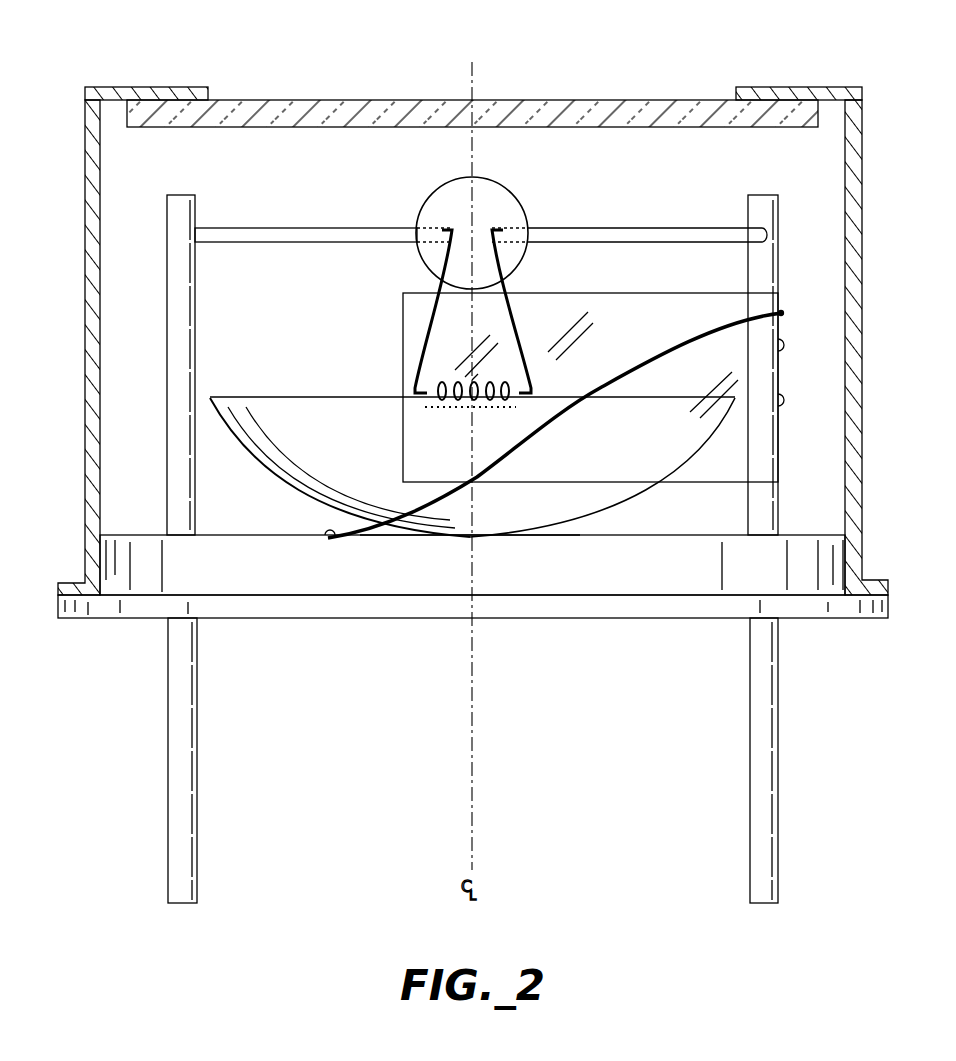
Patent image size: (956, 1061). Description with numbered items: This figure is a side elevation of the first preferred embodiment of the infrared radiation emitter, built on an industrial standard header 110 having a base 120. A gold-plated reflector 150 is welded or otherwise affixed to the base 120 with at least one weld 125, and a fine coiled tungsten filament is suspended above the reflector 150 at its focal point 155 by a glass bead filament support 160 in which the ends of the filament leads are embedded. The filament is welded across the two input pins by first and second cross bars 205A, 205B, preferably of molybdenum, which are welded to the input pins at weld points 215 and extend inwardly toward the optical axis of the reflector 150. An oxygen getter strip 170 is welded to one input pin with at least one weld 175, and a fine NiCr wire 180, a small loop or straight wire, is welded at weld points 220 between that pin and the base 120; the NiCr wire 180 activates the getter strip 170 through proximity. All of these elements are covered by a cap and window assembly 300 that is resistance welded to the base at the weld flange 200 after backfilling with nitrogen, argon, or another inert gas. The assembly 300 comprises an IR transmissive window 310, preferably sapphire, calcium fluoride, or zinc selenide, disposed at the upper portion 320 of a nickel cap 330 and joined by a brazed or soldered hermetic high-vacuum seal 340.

The cap and window assembly 300 is at (454, 304).
The IR transmissive window 310 is at (592, 100).
The upper portion 320 is at (877, 123).
The cap 330 is at (86, 320).
The hermetic/high vacuum seal 340 is at (212, 97).
The weld flange 200 is at (476, 615).
The header 110 is at (337, 628).
The base 120 is at (145, 587).
The weld 125 is at (484, 546).
The reflector 150 is at (215, 445).
The focal point 155 is at (405, 374).
The glass bead filament support 160 is at (495, 212).
The oxygen getter strip 170 is at (588, 291).
The weld 175 is at (795, 398).
The NiCr wire 180 is at (562, 432).
The first cross bar 205A is at (316, 228).
The second cross bar 205B is at (620, 228).
The weld points 215 is at (198, 225).
The weld points 220 is at (318, 526).